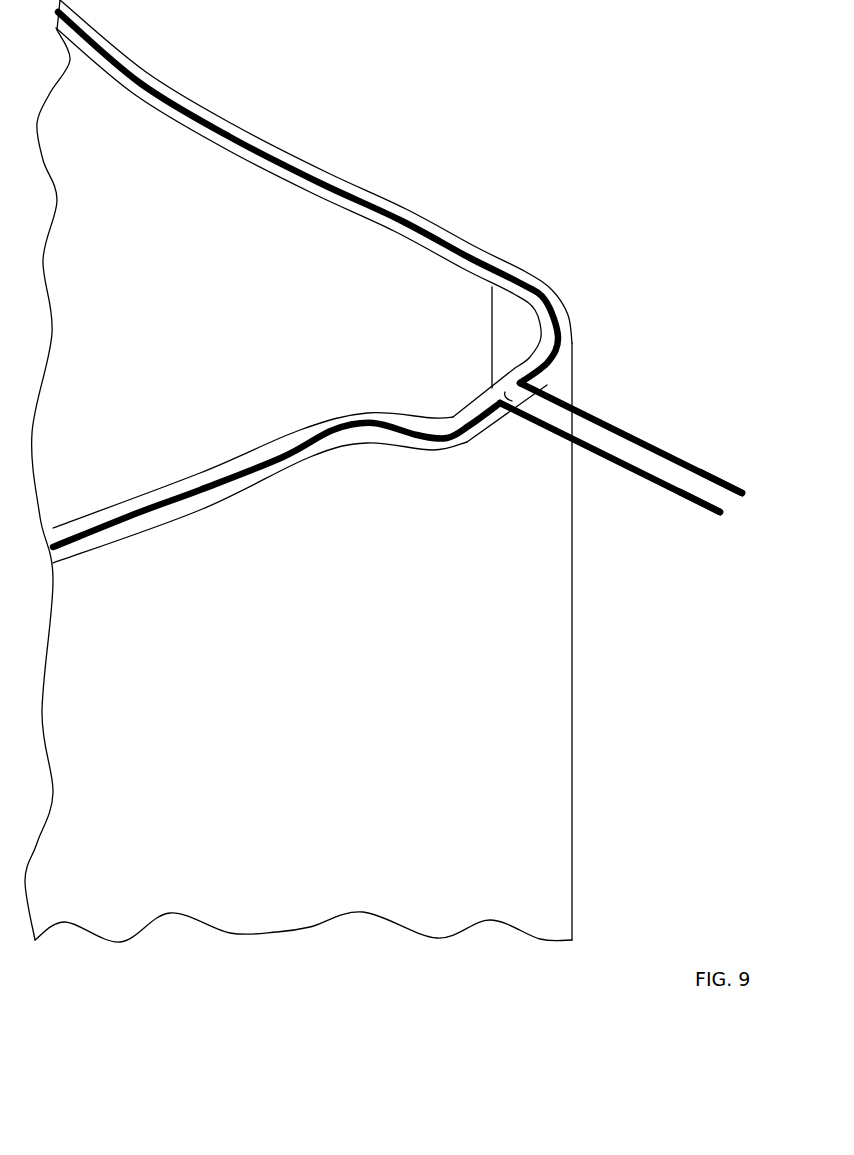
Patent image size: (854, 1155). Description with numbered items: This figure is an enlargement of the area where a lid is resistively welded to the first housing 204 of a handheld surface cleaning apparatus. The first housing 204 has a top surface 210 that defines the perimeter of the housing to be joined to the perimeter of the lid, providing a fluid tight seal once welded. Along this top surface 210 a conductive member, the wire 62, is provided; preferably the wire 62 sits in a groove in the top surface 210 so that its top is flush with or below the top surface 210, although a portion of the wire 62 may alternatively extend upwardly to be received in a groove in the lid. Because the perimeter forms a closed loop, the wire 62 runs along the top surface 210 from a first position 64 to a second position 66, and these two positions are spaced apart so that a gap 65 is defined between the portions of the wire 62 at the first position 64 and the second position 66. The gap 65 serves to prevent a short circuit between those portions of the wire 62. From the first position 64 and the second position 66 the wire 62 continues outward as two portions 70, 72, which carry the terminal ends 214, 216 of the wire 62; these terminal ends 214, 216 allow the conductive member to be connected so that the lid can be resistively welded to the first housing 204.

The wire 62 is at (552, 313).
The top surface 210 is at (565, 350).
The gap 65 is at (530, 388).
The second position 66 is at (512, 378).
The first position 64 is at (490, 402).
The portion 70 is at (667, 451).
The terminal end 214 is at (740, 493).
The portion 72 is at (663, 495).
The terminal end 216 is at (719, 515).
The first housing 204 is at (573, 806).